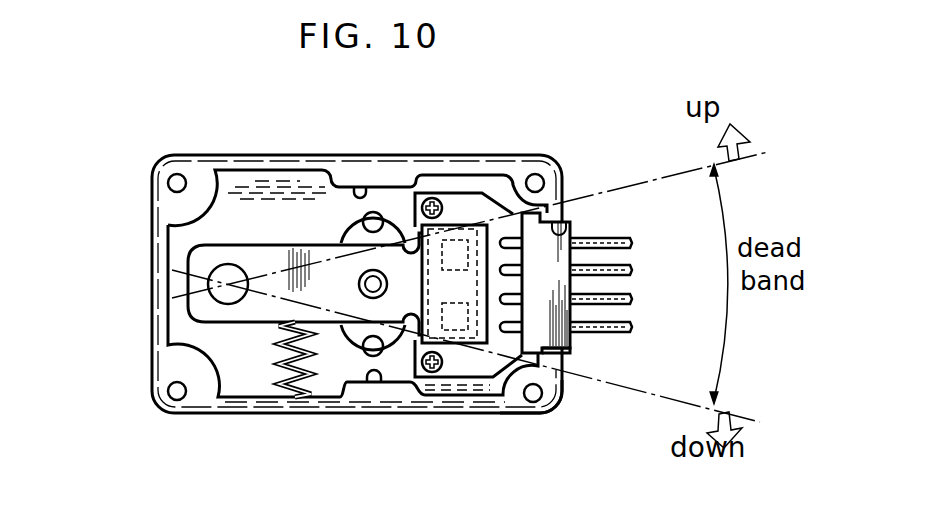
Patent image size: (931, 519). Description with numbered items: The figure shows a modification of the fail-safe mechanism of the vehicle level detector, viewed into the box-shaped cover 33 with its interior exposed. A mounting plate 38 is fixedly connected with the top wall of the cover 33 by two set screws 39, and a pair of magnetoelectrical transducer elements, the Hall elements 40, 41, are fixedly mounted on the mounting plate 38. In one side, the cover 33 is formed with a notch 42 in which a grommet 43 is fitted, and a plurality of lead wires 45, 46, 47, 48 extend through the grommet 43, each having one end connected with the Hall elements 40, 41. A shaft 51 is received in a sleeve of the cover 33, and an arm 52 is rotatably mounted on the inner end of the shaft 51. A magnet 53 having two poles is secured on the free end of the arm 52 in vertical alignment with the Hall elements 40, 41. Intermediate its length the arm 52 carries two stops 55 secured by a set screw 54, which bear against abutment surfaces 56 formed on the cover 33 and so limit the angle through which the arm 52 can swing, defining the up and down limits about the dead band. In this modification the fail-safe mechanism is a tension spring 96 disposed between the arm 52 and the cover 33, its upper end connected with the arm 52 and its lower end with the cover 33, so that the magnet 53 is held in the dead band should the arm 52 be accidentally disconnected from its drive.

The cover 33 is at (263, 162).
The mounting plate 38 is at (490, 349).
The set screws 39 is at (432, 198).
The Hall element 40 is at (462, 228).
The Hall element 41 is at (526, 404).
The notch 42 is at (565, 227).
The grommet 43 is at (570, 343).
The lead wire 45 is at (610, 243).
The lead wire 46 is at (617, 268).
The lead wire 47 is at (618, 297).
The lead wire 48 is at (618, 327).
The shaft 51 is at (168, 282).
The arm 52 is at (258, 314).
The magnet 53 is at (458, 243).
The set screw 54 is at (358, 290).
The stops 55 is at (348, 350).
The abutment surfaces 56 is at (358, 187).
The tension spring 96 is at (277, 353).